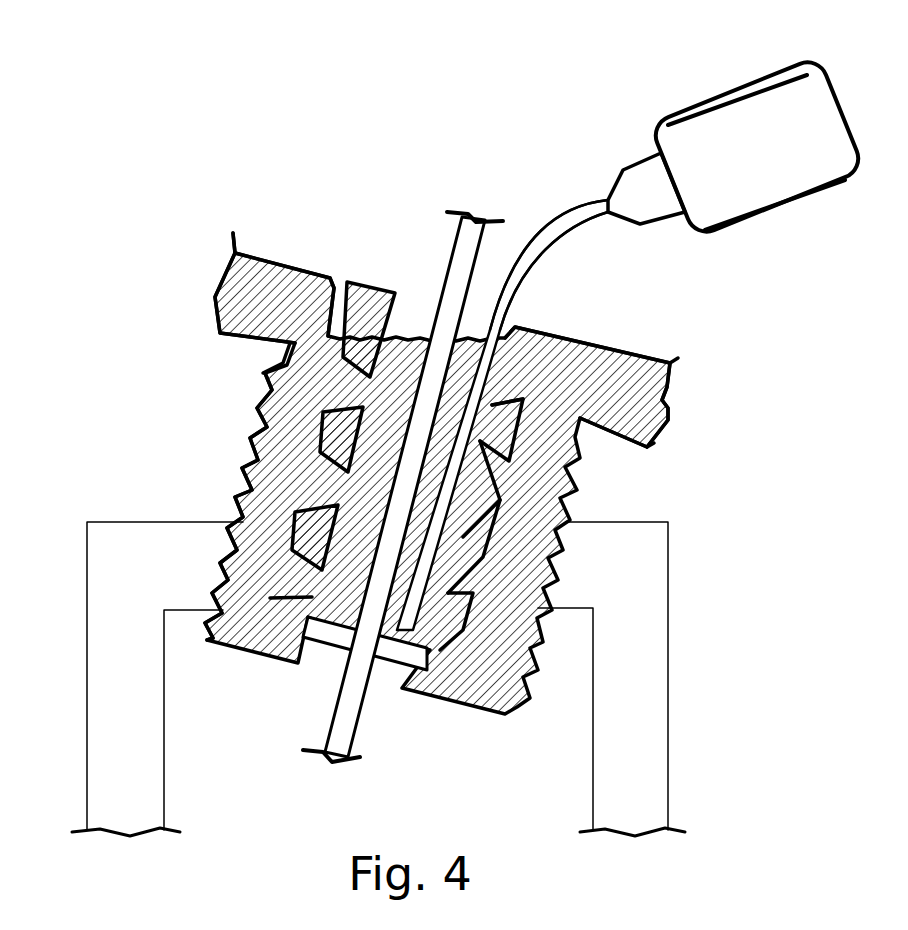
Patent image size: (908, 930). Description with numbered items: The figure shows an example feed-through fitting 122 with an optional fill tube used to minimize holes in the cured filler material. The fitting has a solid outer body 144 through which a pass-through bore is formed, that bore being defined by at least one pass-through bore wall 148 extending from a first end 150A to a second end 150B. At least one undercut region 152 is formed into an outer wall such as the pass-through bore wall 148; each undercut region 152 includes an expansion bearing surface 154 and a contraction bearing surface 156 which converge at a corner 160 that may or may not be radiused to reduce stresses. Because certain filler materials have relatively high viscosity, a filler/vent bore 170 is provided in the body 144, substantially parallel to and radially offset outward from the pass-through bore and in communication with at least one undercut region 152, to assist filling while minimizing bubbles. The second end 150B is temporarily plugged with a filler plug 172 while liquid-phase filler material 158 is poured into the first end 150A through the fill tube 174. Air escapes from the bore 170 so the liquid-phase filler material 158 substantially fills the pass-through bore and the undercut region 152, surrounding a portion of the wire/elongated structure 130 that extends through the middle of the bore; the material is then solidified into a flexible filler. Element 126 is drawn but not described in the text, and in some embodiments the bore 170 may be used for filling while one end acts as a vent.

The feed-through fitting 122 is at (690, 352).
The upper jaw piece 126 is at (627, 365).
The wire/elongated structure 130 is at (450, 238).
The solid outer body 144 is at (508, 316).
The pass-through bore wall 148 is at (395, 316).
The first end 150A is at (418, 320).
The second end 150B is at (327, 653).
The undercut region 152 is at (333, 391).
The expansion bearing surface 154 is at (265, 572).
The contraction bearing surface 156 is at (283, 630).
The liquid-phase filler material 158 is at (338, 590).
The corner 160 is at (520, 383).
The filler/vent bore 170 is at (342, 300).
The filler plug 172 is at (387, 665).
The fill tube 174 is at (572, 208).